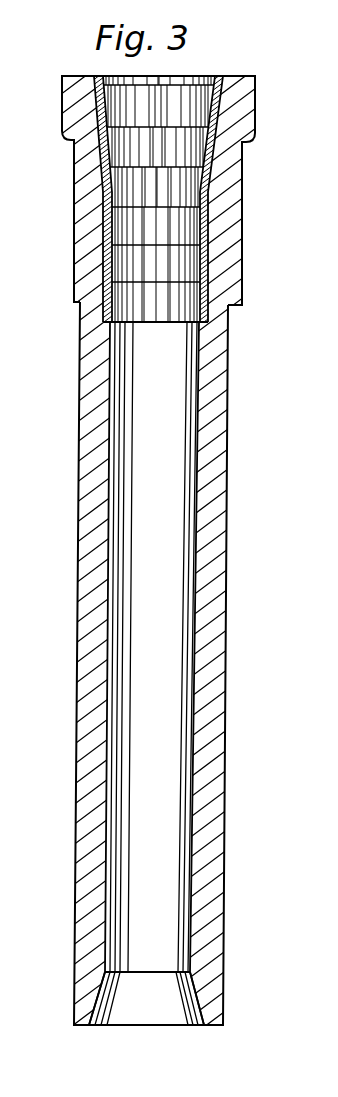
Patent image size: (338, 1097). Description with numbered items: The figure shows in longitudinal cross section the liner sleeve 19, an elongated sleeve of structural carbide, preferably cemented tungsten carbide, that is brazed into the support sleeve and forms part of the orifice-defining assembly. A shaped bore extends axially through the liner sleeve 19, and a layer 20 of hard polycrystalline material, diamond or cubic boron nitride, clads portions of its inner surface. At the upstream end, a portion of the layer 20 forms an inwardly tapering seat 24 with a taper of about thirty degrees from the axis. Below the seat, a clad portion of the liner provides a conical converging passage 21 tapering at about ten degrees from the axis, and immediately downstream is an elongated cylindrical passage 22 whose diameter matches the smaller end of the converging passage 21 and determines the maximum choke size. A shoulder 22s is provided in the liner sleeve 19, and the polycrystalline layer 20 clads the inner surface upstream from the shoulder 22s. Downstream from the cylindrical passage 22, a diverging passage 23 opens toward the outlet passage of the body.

The liner sleeve 19 is at (223, 618).
The layer of hard polycrystalline material 20 is at (226, 156).
The conical converging passage 21 is at (204, 127).
The elongated cylindrical passage 22 is at (112, 220).
The shoulder 22s is at (202, 323).
The diverging passage 23 is at (188, 1026).
The inwardly tapering seat 24 is at (107, 78).